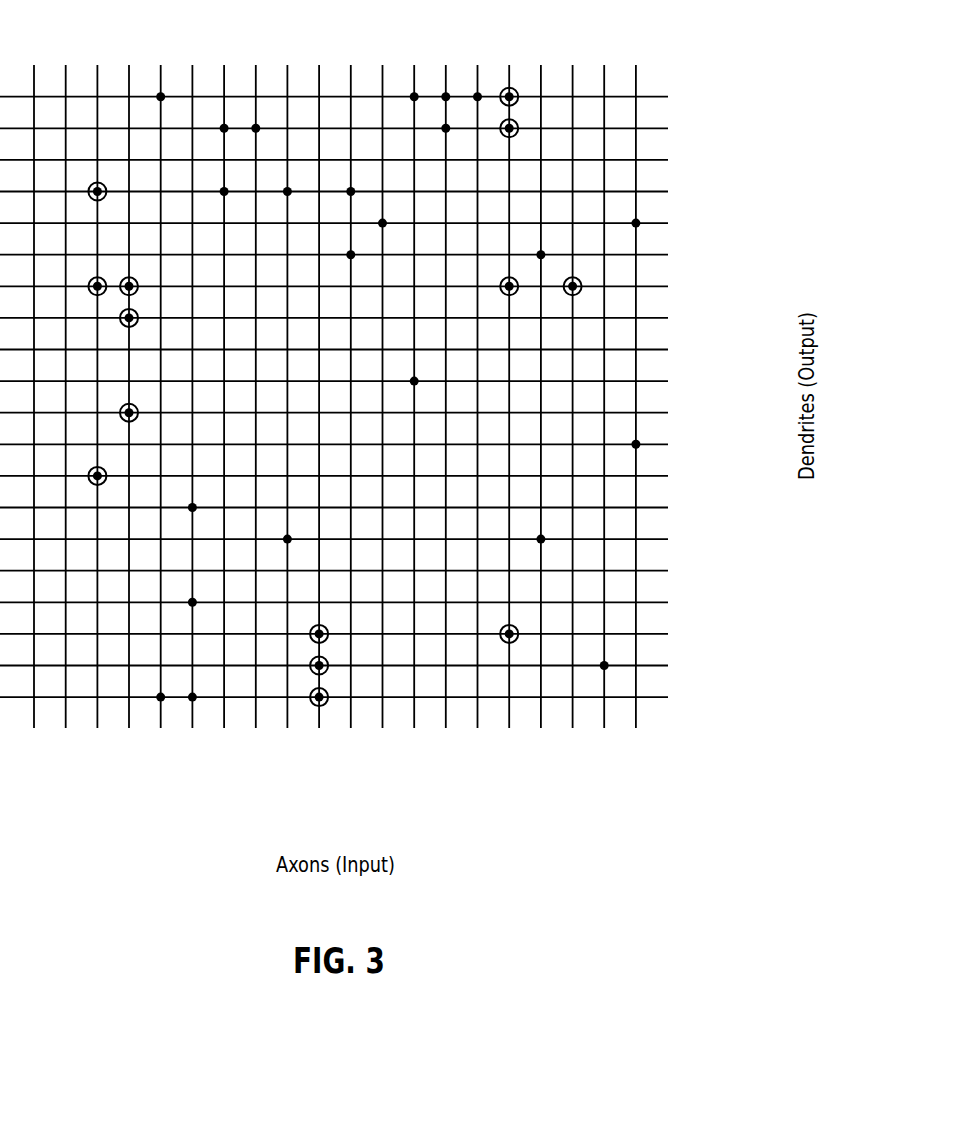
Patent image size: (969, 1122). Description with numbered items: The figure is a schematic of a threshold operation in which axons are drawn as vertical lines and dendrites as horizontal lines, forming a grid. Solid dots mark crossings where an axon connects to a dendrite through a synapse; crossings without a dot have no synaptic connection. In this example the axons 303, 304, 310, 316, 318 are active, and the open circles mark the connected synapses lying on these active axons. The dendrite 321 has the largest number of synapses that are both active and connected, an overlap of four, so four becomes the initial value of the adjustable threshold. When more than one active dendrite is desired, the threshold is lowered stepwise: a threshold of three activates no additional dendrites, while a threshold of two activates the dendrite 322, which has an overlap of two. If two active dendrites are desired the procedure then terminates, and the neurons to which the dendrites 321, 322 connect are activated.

The axon 303 is at (89, 440).
The axon 304 is at (138, 440).
The axon 310 is at (321, 440).
The axon 316 is at (509, 440).
The axon 318 is at (573, 440).
The dendrite 321 is at (376, 289).
The dendrite 322 is at (376, 632).